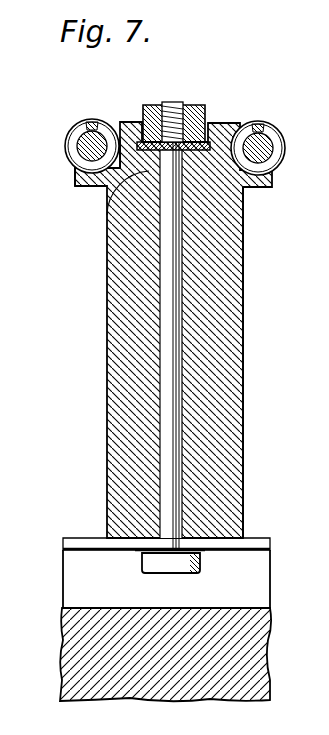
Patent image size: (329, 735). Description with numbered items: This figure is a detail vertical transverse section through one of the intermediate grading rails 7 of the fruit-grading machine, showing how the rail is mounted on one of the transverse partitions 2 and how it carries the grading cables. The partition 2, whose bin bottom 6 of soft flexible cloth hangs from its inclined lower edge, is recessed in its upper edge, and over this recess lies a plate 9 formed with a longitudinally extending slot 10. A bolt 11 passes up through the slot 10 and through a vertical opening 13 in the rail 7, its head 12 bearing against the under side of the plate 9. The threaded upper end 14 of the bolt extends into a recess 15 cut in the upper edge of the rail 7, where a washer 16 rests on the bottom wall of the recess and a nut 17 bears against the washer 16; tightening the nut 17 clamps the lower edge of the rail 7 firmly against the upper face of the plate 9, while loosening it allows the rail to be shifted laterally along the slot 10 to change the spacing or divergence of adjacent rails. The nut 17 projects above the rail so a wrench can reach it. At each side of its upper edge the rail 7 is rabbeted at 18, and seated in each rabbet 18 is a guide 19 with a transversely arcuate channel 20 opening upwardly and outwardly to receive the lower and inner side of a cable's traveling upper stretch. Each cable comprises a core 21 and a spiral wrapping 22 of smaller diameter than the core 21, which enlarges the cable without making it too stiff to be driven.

The partition 2 is at (240, 668).
The bin bottom 6 is at (250, 595).
The grading rail 7 is at (220, 386).
The plate 9 is at (250, 548).
The slot 10 is at (225, 540).
The bolt 11 is at (170, 453).
The head 12 is at (183, 573).
The opening 13 is at (182, 412).
The threaded upper end 14 is at (183, 104).
The recess 15 is at (215, 124).
The washer 16 is at (245, 204).
The nut 17 is at (200, 108).
The rabbet 18 is at (111, 210).
The guide 19 is at (92, 184).
The channel 20 is at (72, 168).
The core 21 is at (273, 152).
The spiral wrapping 22 is at (270, 130).